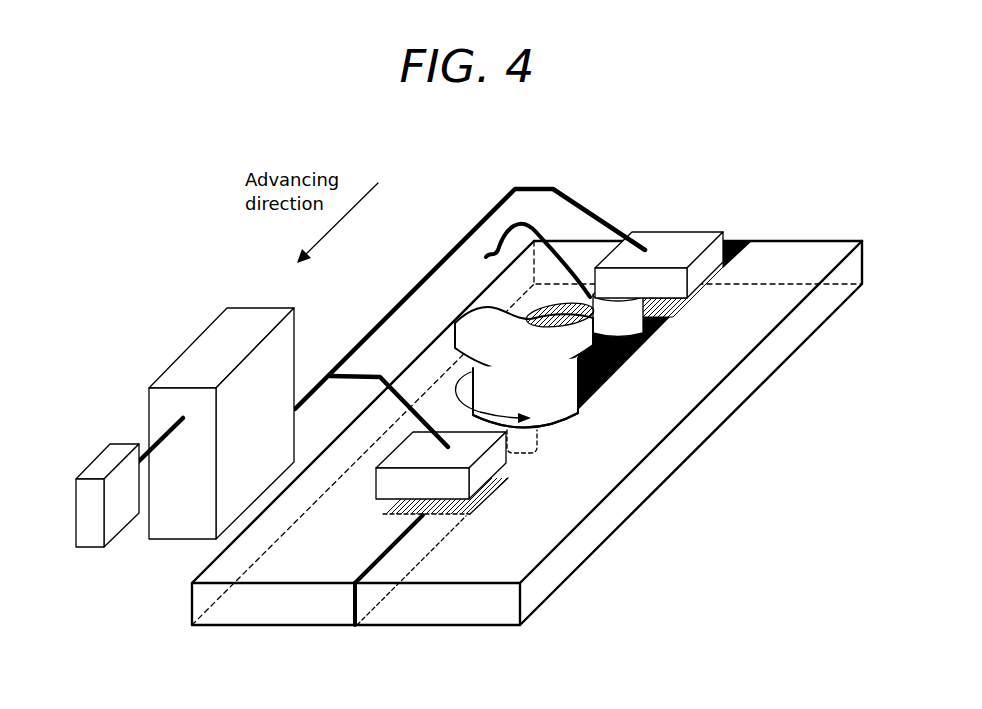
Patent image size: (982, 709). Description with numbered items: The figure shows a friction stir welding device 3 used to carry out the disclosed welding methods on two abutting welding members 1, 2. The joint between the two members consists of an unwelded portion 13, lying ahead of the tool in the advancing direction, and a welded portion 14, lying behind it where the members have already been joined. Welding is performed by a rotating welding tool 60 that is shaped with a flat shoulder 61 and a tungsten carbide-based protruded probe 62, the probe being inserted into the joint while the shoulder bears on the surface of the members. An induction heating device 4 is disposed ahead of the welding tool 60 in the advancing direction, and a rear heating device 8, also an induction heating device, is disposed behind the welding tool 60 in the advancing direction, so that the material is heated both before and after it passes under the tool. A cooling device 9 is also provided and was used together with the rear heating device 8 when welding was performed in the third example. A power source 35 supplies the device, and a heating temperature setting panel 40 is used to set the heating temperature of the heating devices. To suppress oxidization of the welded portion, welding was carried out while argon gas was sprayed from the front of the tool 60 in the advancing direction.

The welding member 1 is at (243, 607).
The welding member 2 is at (490, 607).
The welding device 3 is at (482, 322).
The induction heating device 4 is at (490, 462).
The rear heating device 8 is at (693, 275).
The cooling device 9 is at (630, 318).
The unwelded portion 13 is at (352, 613).
The welded portion 14 is at (733, 240).
The power source 35 is at (218, 342).
The heating temperature setting panel 40 is at (108, 462).
The welding tool (rotor) 60 is at (565, 412).
The shoulder 61 is at (537, 430).
The probe 62 is at (540, 448).